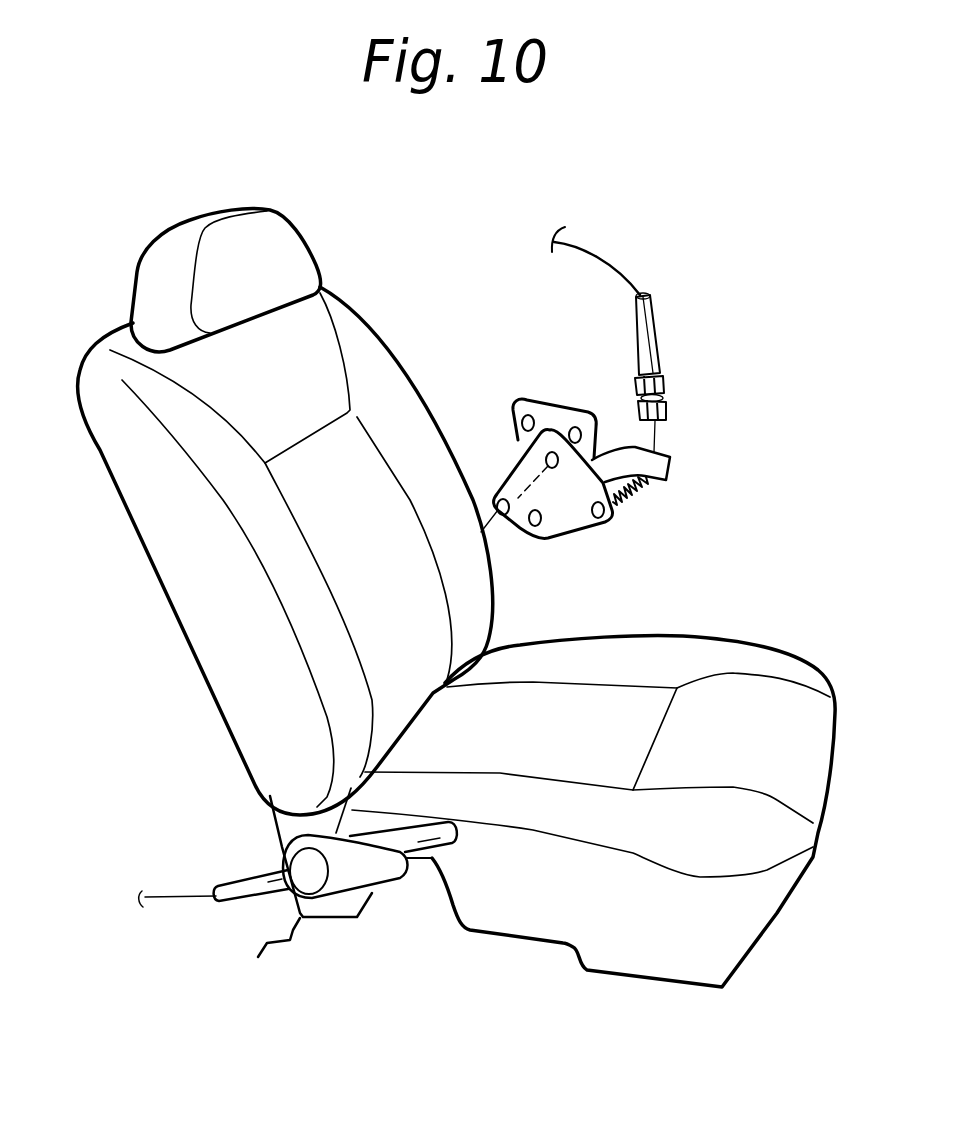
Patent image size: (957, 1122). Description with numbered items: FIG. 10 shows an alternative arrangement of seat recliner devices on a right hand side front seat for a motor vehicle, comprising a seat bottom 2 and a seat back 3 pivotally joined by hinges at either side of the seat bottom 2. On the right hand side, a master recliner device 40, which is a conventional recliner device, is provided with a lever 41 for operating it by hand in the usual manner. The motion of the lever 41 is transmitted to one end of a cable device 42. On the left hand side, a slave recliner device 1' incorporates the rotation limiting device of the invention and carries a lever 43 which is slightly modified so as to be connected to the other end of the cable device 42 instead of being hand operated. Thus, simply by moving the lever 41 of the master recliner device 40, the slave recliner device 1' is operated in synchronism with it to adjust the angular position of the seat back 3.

The slave recliner device 1' is at (615, 474).
The seat bottom 2 is at (683, 641).
The seat back 3 is at (228, 688).
The master recliner device 40 is at (368, 810).
The lever 41 is at (433, 858).
The cable device 42 is at (167, 900).
The lever 43 is at (660, 457).